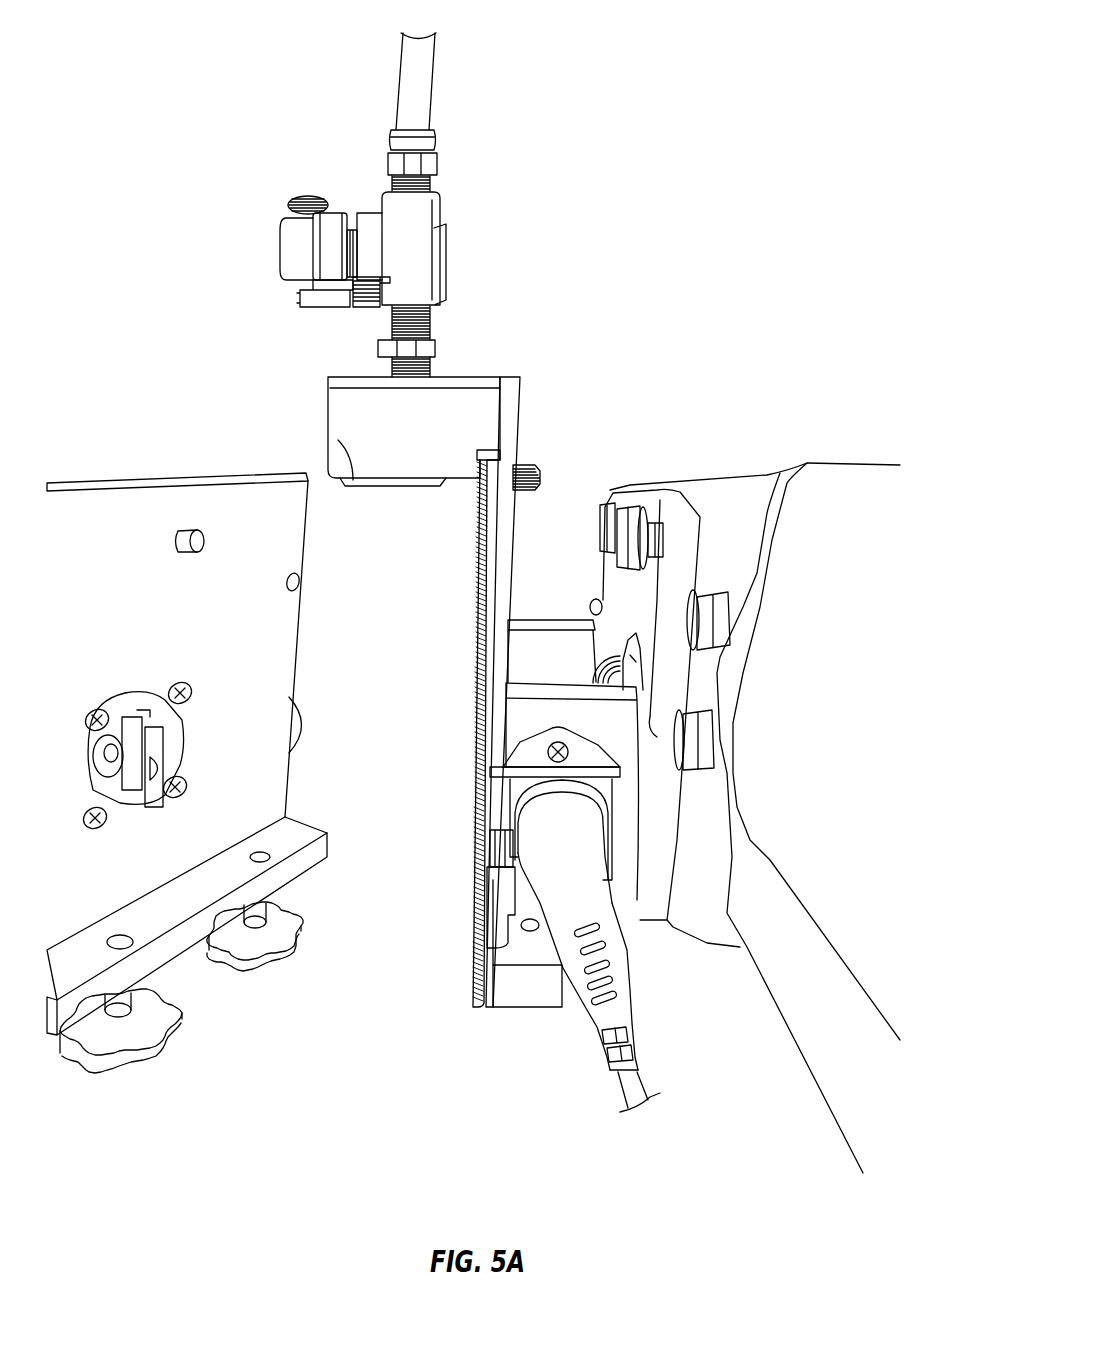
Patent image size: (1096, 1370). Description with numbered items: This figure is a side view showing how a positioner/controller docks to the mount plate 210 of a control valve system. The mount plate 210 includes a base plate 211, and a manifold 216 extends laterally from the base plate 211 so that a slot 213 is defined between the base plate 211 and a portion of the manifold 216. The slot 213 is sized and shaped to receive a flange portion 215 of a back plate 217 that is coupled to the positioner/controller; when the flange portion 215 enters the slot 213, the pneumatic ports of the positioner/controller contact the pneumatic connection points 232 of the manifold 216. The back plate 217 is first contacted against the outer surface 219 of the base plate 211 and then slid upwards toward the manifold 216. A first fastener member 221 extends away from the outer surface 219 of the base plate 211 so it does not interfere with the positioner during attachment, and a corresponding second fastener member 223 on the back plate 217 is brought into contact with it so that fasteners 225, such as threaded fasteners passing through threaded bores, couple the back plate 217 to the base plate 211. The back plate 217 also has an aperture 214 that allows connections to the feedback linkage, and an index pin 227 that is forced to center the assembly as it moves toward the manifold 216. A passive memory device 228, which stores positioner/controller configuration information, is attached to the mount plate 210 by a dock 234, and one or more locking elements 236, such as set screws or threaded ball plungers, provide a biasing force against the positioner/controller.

The mount plate 210 is at (539, 364).
The base plate 211 is at (503, 592).
The slot 213 is at (487, 460).
The aperture 214 is at (146, 693).
The flange portion 215 is at (155, 485).
The manifold 216 is at (458, 415).
The back plate 217 is at (286, 645).
The outer surface 219 is at (472, 950).
The first fastener member 221 is at (528, 997).
The second fastener member 223 is at (170, 923).
The fasteners 225 is at (145, 1058).
The index pin 227 is at (207, 527).
The passive memory device 228 is at (634, 995).
The pneumatic connection points 232 is at (353, 480).
The dock 234 is at (615, 866).
The locking elements 236 is at (537, 480).